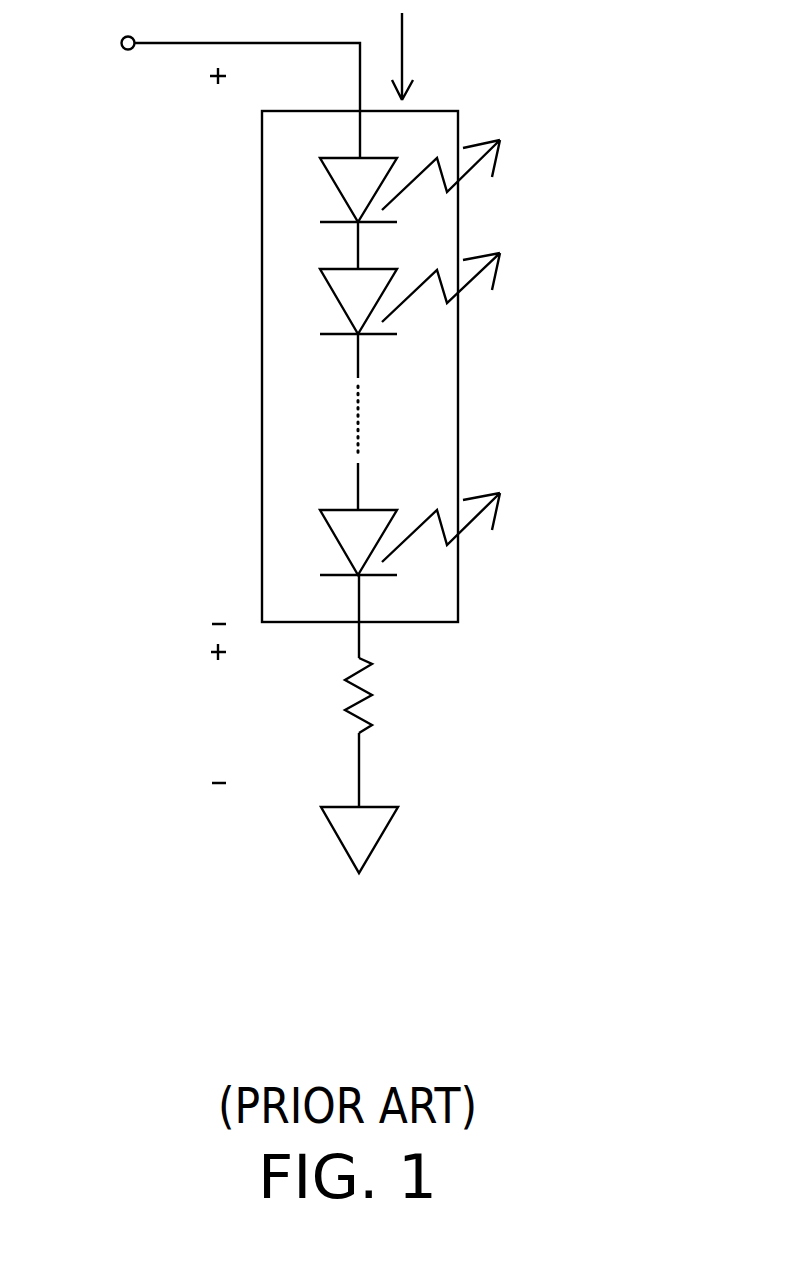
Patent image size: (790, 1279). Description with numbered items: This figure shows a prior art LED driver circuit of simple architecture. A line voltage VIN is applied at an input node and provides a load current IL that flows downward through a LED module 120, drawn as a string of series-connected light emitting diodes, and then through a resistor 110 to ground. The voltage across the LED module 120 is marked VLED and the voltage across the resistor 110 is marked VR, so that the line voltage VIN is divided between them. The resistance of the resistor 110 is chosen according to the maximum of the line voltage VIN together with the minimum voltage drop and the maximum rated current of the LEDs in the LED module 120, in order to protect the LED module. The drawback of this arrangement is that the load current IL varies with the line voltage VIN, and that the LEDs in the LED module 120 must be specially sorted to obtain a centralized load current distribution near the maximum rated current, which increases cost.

The resistor 110 is at (368, 708).
The LED module 120 is at (458, 375).
The line voltage VIN is at (209, 79).
The load current IL is at (419, 56).
The LED string voltage VLED is at (192, 346).
The resistor voltage VR is at (211, 713).